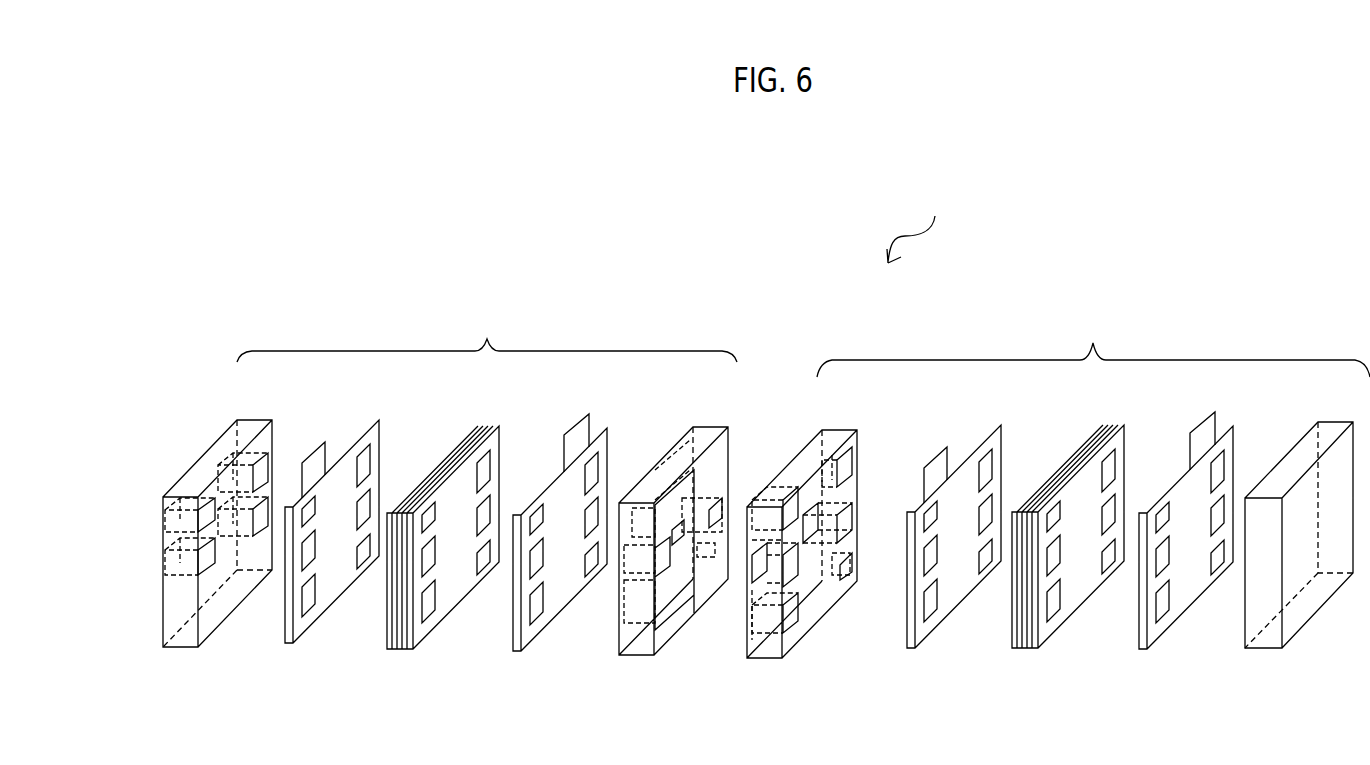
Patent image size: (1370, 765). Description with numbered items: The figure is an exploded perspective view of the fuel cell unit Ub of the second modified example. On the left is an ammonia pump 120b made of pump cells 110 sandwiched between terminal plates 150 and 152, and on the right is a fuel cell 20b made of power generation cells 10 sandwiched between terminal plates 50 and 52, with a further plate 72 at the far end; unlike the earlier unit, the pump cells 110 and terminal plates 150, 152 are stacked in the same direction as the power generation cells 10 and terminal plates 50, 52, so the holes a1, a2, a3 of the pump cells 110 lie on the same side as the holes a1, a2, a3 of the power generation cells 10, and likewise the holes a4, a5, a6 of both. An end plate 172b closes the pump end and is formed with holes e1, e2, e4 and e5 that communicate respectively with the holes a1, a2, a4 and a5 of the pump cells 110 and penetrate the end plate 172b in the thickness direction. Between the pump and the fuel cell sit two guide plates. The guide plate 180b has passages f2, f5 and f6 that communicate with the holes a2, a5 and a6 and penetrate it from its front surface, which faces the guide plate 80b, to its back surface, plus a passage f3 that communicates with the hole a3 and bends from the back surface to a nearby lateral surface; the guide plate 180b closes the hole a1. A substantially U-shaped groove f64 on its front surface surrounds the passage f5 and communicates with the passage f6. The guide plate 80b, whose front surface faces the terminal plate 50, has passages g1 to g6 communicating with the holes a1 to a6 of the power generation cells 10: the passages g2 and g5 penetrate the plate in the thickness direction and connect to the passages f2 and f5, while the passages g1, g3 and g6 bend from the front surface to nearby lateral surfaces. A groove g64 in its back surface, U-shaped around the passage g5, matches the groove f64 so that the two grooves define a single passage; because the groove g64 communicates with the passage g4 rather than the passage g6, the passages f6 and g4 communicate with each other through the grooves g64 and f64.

The fuel cell unit Ub is at (918, 227).
The ammonia pump 120b is at (487, 336).
The fuel cell 20b is at (1093, 346).
The end plate 172b is at (258, 418).
The terminal plate 150 is at (380, 420).
The pump cell 110 is at (495, 425).
The terminal plate 152 is at (600, 427).
The guide plate 180b is at (717, 427).
The guide plate 80b is at (843, 428).
The terminal plate 50 is at (998, 425).
The power generation cell 10 is at (1125, 425).
The terminal plate 52 is at (1232, 430).
The end block 72 is at (1345, 421).
The hole e1 is at (267, 452).
The hole e2 is at (267, 507).
The hole e4 is at (200, 512).
The hole e5 is at (200, 550).
The hole a1 is at (379, 422).
The hole a2 is at (367, 457).
The hole a3 is at (363, 552).
The hole a4 is at (318, 490).
The hole a5 is at (311, 549).
The hole a6 is at (311, 595).
The passage f2 is at (727, 480).
The passage f3 is at (709, 560).
The passage f5 is at (625, 600).
The passage f6 is at (622, 592).
The groove f64 is at (668, 608).
The passage g1 is at (852, 449).
The passage g2 is at (852, 510).
The passage g3 is at (850, 585).
The passage g4 is at (800, 505).
The passage g5 is at (812, 595).
The passage g6 is at (787, 605).
The groove g64 is at (763, 665).